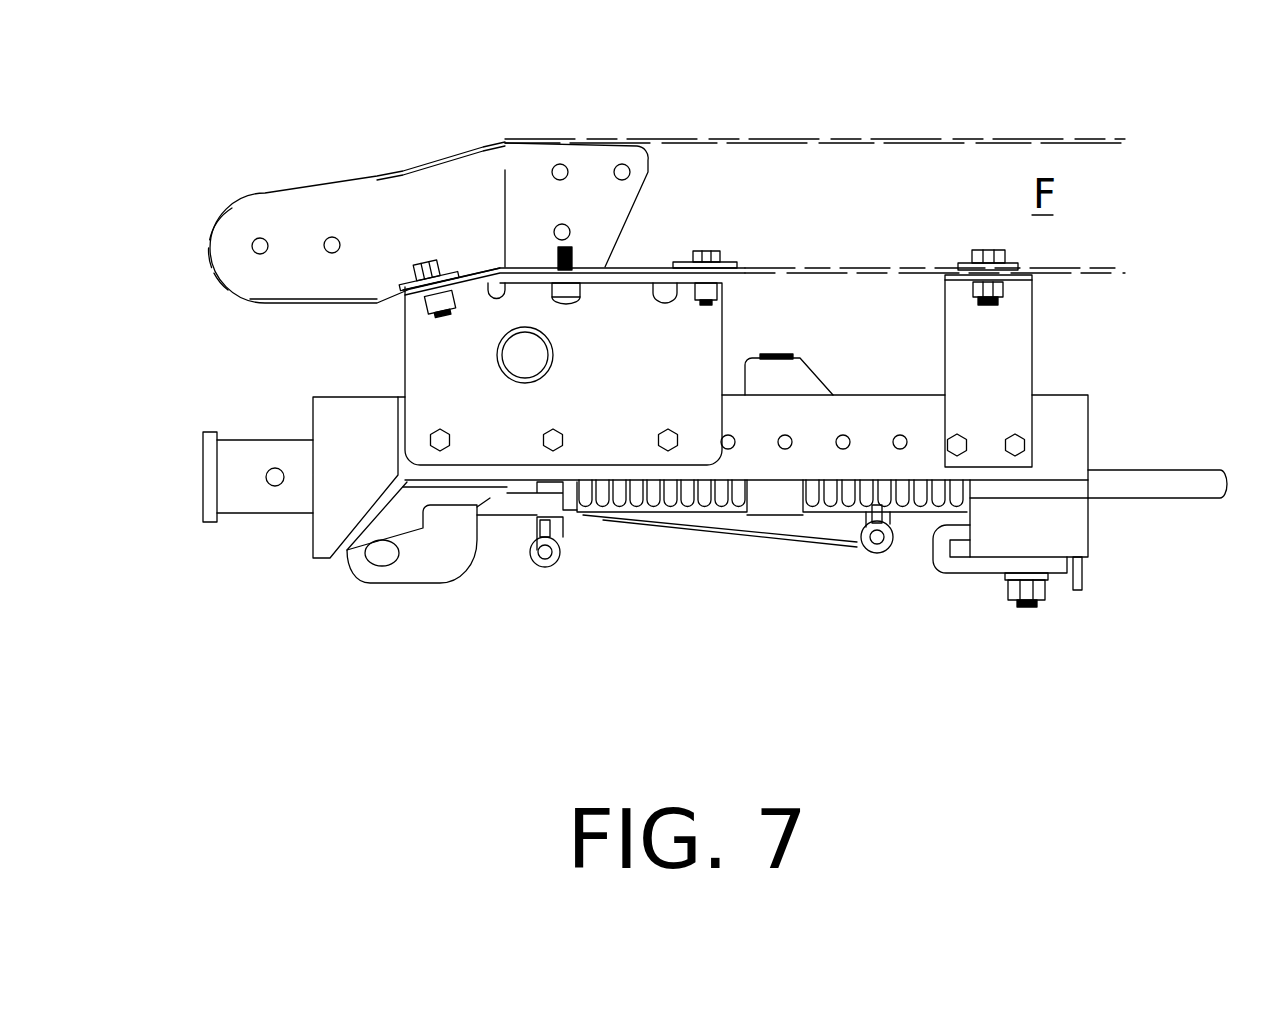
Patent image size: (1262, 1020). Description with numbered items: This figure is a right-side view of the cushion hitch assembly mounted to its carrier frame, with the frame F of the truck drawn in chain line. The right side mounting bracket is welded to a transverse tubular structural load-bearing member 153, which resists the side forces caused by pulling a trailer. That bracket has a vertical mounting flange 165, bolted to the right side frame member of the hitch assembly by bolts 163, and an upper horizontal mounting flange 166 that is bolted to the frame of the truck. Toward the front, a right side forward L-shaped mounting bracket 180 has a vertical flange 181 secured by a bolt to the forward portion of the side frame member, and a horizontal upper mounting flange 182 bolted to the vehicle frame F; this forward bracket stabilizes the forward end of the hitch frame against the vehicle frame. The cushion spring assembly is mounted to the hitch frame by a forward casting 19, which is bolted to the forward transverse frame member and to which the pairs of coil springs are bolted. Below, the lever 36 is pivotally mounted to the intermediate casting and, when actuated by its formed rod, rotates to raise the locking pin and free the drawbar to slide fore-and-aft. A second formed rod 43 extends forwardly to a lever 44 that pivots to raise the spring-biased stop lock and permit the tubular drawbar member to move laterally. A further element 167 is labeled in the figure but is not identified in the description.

The forward casting 19 is at (1058, 520).
The lever 36 is at (900, 537).
The second formed rod 43 is at (493, 555).
The lever 44 is at (527, 553).
The transverse tubular structural load-bearing member 153 is at (557, 347).
The bolts 163 is at (445, 450).
The vertical mounting flange 165 is at (697, 388).
The horizontal mounting flange 166 is at (523, 267).
The fastener 167 is at (437, 315).
The right side forward L-shaped mounting bracket 180 is at (1005, 407).
The vertical flange 181 is at (973, 370).
The horizontal upper mounting flange 182 is at (1022, 283).